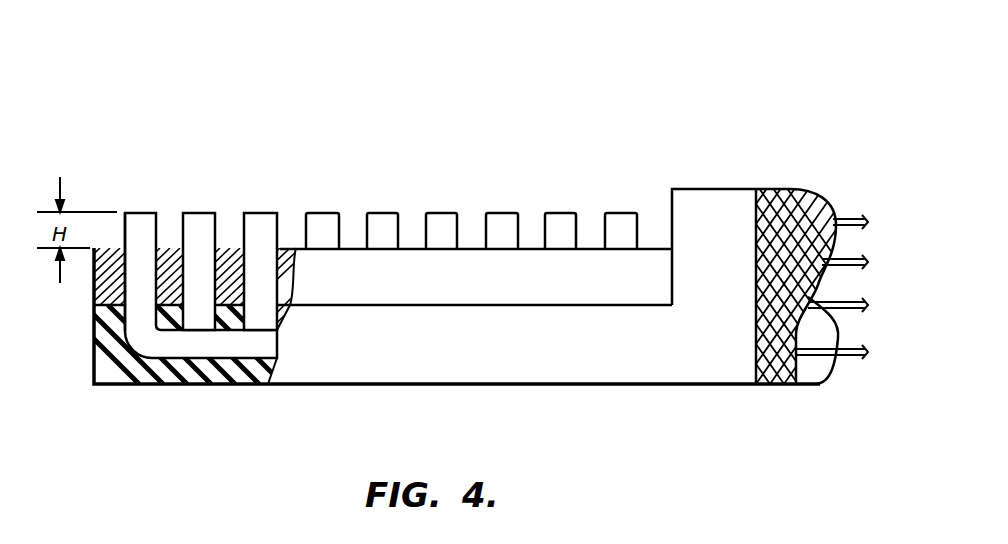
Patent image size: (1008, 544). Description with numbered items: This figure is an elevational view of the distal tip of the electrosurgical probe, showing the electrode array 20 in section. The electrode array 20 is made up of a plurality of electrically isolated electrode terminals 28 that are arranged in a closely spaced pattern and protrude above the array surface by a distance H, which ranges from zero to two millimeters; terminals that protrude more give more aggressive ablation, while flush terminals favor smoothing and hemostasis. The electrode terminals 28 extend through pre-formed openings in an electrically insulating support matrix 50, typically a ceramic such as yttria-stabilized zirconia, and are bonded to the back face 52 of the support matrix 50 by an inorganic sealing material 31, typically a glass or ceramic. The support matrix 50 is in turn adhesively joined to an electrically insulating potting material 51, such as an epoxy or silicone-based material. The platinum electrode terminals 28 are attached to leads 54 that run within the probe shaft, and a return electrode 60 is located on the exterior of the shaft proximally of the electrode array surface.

The electrode array 20 is at (213, 106).
The electrode terminals 28 is at (258, 212).
The inorganic sealing material 31 is at (207, 327).
The electrically insulating support matrix 50 is at (97, 285).
The electrically insulating potting material 51 is at (660, 360).
The back face 52 is at (95, 342).
The leads 54 is at (862, 265).
The return electrode 60 is at (780, 388).